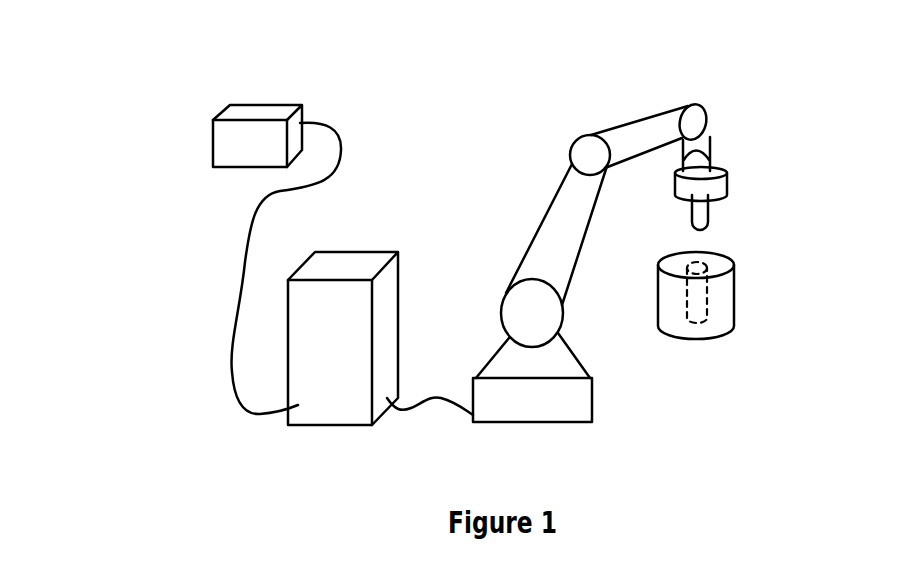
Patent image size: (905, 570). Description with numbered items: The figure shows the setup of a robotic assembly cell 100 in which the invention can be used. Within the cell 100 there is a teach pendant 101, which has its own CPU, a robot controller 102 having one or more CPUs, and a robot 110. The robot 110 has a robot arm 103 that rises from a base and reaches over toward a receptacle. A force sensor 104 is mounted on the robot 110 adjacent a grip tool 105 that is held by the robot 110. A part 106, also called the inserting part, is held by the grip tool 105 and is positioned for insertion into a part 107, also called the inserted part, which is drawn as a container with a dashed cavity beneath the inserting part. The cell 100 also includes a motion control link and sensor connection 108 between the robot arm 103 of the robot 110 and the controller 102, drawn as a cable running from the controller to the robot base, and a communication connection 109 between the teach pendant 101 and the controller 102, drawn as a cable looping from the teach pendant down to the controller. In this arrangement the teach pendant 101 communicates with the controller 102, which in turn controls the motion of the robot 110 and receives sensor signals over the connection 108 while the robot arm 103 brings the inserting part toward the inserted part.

The robotic assembly cell 100 is at (537, 476).
The teach pendant 101 is at (240, 128).
The robot controller 102 is at (338, 263).
The robot arm 103 is at (608, 127).
The force sensor 104 is at (697, 167).
The grip tool 105 is at (710, 185).
The part 106 is at (697, 215).
The part 107 is at (707, 312).
The motion control link and sensor connection 108 is at (423, 397).
The communication connection 109 is at (240, 277).
The robot 110 is at (655, 242).